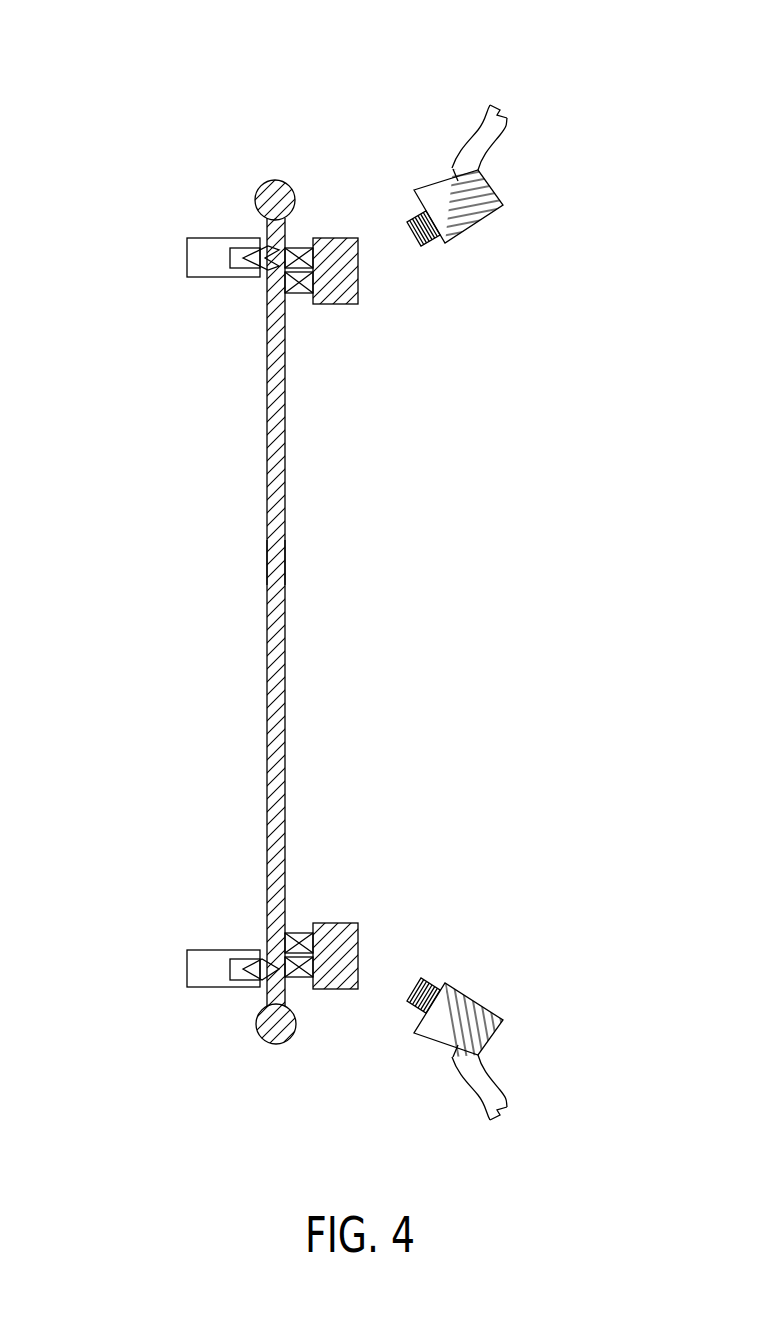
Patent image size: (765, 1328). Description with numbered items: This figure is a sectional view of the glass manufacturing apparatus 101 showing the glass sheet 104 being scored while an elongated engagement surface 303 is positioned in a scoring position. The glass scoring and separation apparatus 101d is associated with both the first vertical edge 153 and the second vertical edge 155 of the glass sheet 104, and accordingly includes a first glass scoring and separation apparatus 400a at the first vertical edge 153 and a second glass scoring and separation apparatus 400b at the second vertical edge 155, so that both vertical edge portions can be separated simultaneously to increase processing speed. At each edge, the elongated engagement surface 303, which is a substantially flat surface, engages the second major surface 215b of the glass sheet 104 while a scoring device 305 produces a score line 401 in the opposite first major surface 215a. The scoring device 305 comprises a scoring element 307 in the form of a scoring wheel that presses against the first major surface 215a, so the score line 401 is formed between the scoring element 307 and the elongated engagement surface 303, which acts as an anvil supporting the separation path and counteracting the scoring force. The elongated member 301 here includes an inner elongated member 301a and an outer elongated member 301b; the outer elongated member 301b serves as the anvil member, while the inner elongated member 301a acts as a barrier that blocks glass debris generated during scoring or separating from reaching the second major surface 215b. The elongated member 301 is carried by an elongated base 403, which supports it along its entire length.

The glass manufacturing apparatus 101 is at (130, 76).
The glass scoring and separation apparatus 101d is at (229, 116).
The glass sheet 104 is at (286, 608).
The first vertical edge 153 is at (280, 182).
The second vertical edge 155 is at (274, 1046).
The first major surface 215a is at (256, 562).
The second major surface 215b is at (296, 562).
The elongated member 301 is at (298, 230).
The inner elongated member 301a is at (295, 294).
The outer elongated member 301b is at (300, 245).
The elongated engagement surface 303 is at (268, 986).
The scoring device 305 is at (207, 294).
The scoring element 307 is at (262, 273).
The first glass scoring and separation apparatus 400a is at (373, 319).
The second glass scoring and separation apparatus 400b is at (215, 1003).
The score line 401 is at (270, 247).
The elongated base 403 is at (359, 938).